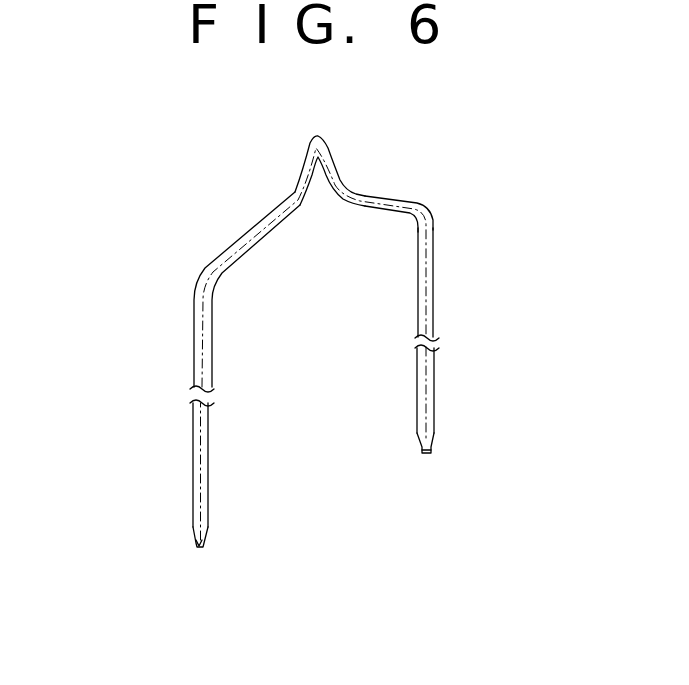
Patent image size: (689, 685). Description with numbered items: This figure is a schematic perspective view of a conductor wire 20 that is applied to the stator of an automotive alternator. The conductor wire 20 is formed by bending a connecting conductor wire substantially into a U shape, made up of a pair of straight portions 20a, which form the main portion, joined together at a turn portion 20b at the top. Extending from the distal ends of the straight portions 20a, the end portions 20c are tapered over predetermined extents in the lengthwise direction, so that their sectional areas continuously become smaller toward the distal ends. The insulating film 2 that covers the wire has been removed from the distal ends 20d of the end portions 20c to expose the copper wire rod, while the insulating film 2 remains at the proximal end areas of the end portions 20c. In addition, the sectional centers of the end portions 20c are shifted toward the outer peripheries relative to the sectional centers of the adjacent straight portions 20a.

The insulating film 2 is at (427, 206).
The conductor wire 20 is at (133, 223).
The straight portions 20a is at (188, 336).
The turn portion 20b is at (293, 172).
The end portions 20c is at (278, 493).
The distal ends 20d is at (205, 545).